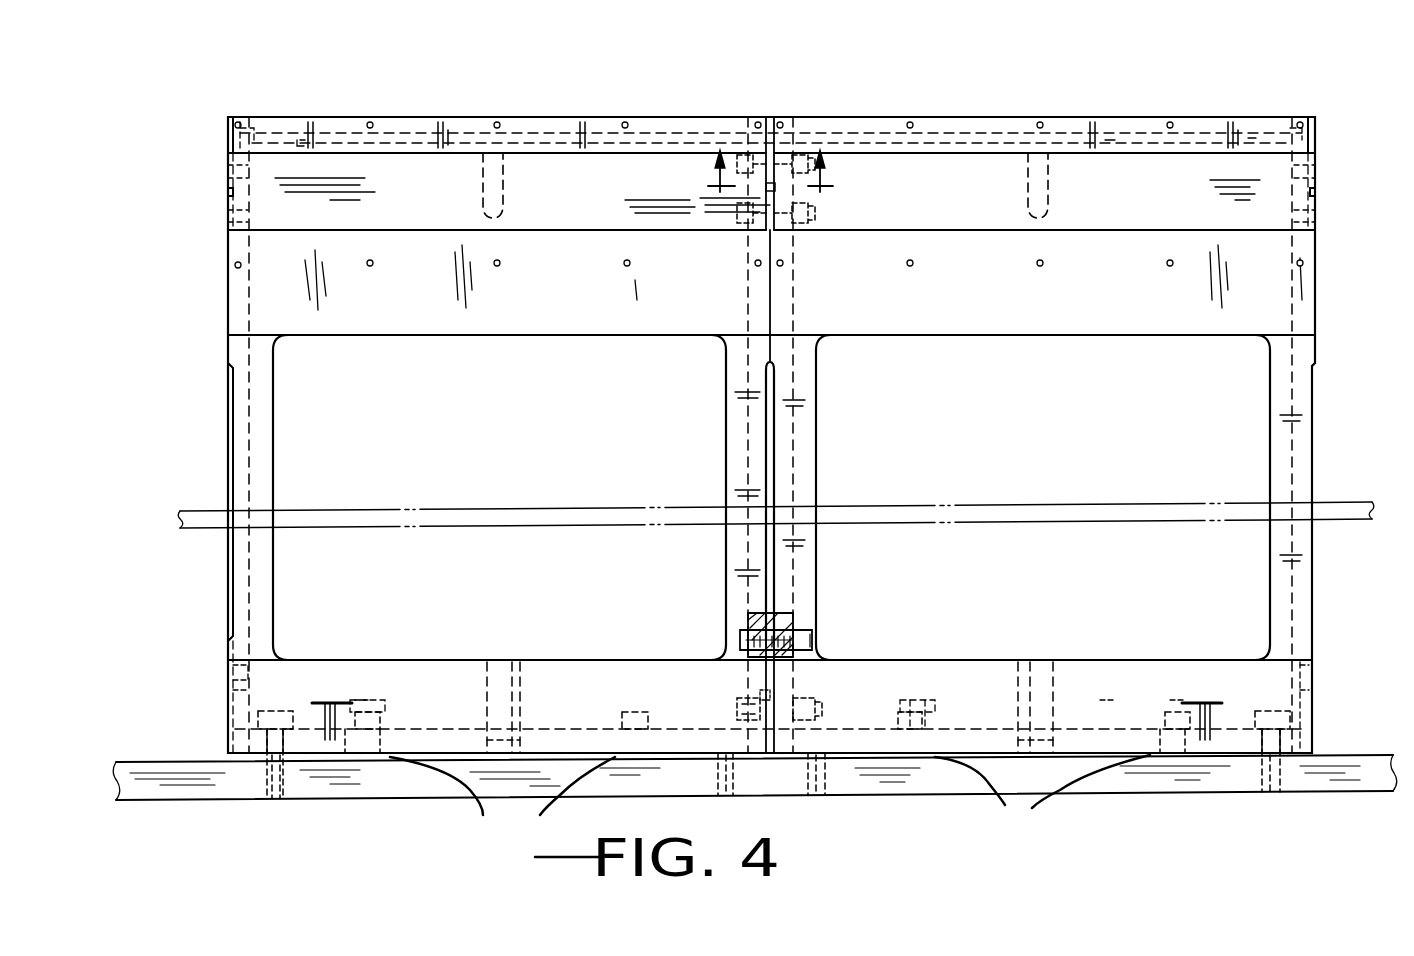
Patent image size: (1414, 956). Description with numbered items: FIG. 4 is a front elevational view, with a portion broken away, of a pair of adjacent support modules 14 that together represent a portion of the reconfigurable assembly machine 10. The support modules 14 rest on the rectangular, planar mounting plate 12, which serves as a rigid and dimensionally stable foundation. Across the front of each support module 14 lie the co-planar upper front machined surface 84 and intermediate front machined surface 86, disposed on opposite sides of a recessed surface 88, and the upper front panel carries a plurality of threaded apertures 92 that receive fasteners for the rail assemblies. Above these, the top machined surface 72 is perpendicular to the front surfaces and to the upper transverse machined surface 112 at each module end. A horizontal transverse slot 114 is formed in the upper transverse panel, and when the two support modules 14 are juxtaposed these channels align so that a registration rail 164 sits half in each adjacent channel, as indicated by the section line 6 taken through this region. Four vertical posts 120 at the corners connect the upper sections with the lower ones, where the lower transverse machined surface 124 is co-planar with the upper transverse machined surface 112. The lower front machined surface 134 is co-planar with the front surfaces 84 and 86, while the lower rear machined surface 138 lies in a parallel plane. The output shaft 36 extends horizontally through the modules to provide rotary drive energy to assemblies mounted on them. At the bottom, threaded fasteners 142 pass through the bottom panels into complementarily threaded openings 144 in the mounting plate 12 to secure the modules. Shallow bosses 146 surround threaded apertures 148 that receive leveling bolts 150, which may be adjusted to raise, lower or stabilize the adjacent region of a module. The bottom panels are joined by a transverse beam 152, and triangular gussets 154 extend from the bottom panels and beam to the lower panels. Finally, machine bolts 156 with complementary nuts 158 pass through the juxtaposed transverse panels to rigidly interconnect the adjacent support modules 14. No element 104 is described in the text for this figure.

The reconfigurable assembly machine 10 is at (735, 88).
The mounting plate 12 is at (152, 787).
The support module 14 is at (533, 105).
The output shaft 36 is at (548, 507).
The section line 6- 6 is at (768, 174).
The top machined surface 72 is at (328, 117).
The upper front machined surface 84 is at (732, 117).
The intermediate front machined surface 86 is at (435, 322).
The recessed surface 88 is at (1180, 209).
The threaded apertures 92 is at (625, 117).
The slot 104 is at (508, 183).
The upper transverse machined surface 112 is at (1315, 140).
The horizontal transverse slot 114 is at (233, 192).
The posts 120 is at (760, 455).
The lower transverse machined surface 124 is at (228, 688).
The lower front machined surface 134 is at (355, 700).
The lower rear machined surface 138 is at (612, 722).
The threaded fasteners 142 is at (288, 705).
The threaded openings 144 is at (263, 780).
The bosses 146 is at (770, 803).
The threaded apertures 148 is at (385, 722).
The leveling bolts 150 is at (372, 700).
The transverse beam 152 is at (1032, 700).
The gussets 154 is at (512, 690).
The machine bolts 156 is at (740, 210).
The nuts 158 is at (800, 640).
The registration rail 164 is at (775, 187).